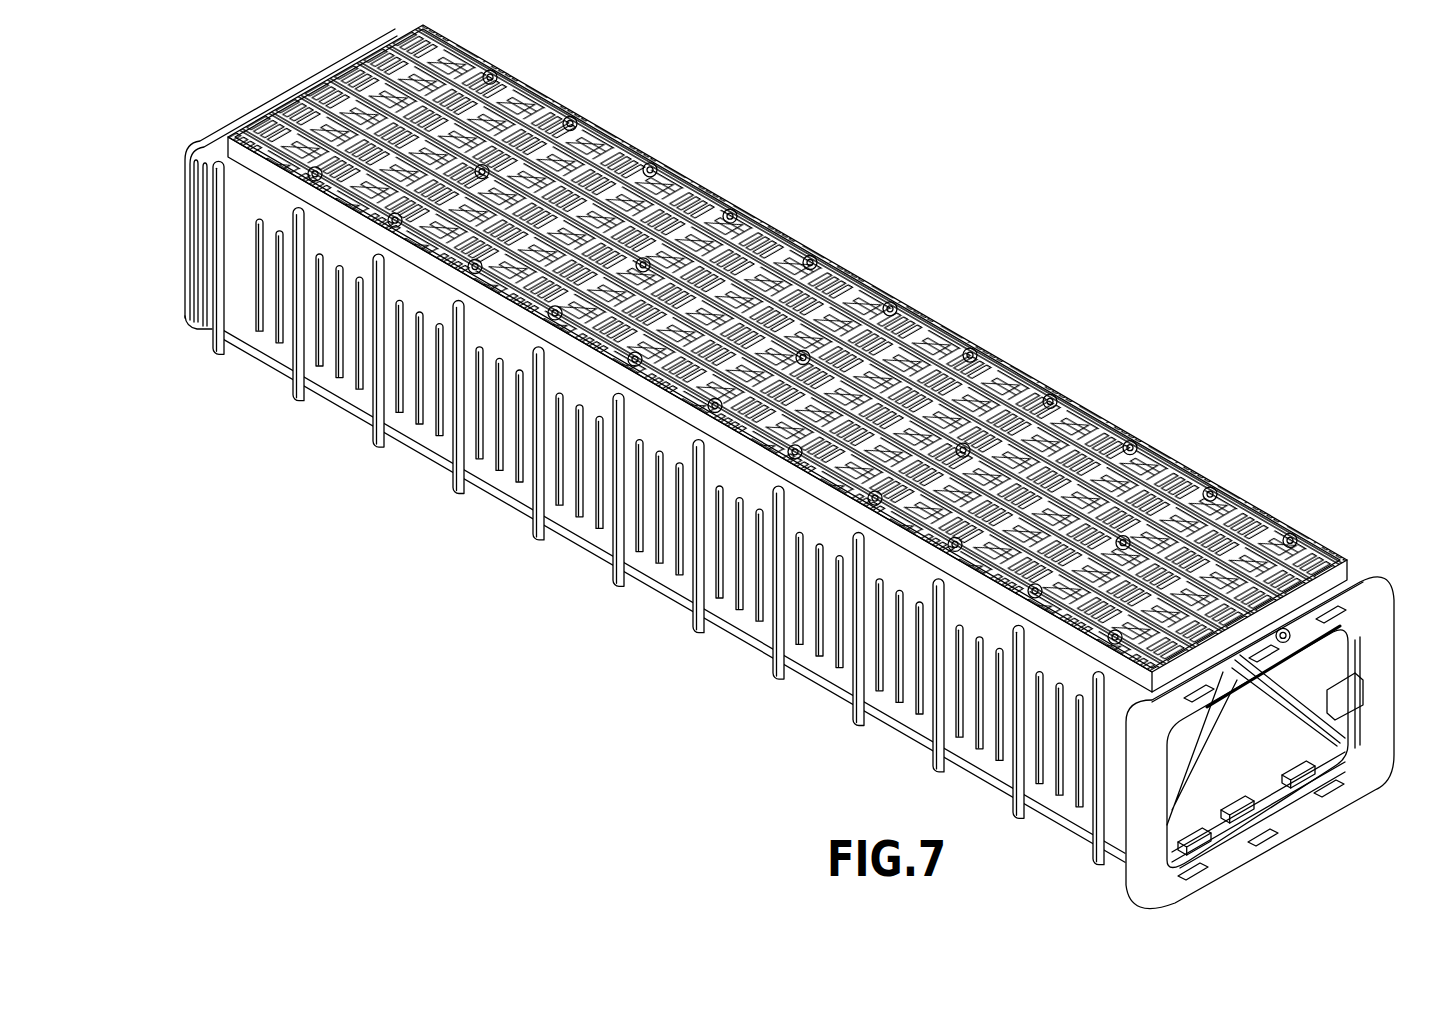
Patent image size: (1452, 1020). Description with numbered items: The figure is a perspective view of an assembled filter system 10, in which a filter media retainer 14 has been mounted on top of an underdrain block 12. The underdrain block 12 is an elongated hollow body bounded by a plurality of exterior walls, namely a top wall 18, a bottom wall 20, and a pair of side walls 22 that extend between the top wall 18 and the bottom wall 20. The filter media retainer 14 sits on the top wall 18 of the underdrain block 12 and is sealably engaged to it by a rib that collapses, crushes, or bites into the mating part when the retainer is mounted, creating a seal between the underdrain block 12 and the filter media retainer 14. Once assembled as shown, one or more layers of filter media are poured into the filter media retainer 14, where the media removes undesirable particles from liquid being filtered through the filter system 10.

The filter system 10 is at (153, 62).
The underdrain block 12 is at (669, 596).
The filter media retainer 14 is at (1300, 522).
The top wall 18 is at (1226, 672).
The bottom wall 20 is at (1283, 836).
The side walls 22 is at (1251, 743).